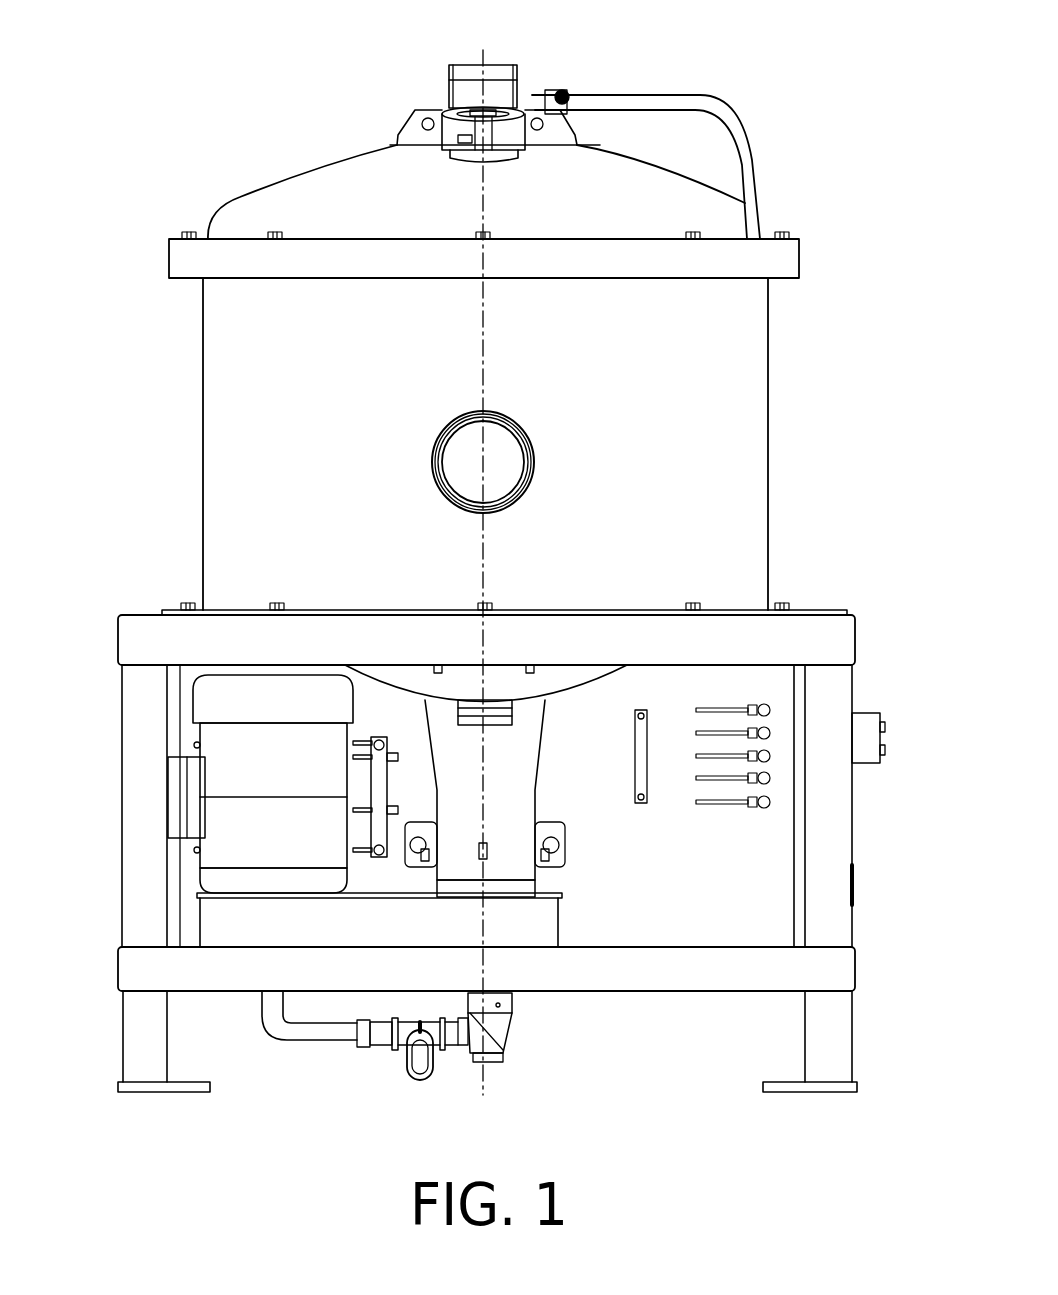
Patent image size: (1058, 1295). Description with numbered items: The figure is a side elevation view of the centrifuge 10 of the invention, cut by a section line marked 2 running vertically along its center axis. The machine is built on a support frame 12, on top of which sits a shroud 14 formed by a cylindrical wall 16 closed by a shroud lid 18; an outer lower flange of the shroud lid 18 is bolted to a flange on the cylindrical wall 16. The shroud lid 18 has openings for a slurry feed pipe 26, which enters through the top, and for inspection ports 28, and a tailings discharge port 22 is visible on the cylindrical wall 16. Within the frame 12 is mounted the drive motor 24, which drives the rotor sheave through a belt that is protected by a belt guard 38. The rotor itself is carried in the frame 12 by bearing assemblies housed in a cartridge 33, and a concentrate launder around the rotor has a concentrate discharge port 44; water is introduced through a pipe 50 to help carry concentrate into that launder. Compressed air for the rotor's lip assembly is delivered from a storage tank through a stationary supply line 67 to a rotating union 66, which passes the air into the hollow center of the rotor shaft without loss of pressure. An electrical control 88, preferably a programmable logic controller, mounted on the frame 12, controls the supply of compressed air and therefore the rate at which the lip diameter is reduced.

The section line 2- 2 is at (483, 50).
The centrifuge 10 is at (160, 487).
The support frame 12 is at (122, 710).
The shroud 14 is at (182, 336).
The cylindrical wall 16 is at (203, 428).
The shroud lid 18 is at (265, 182).
The tailings discharge port 22 is at (535, 462).
The drive motor 24 is at (220, 850).
The slurry feed pipe 26 is at (450, 93).
The inspection ports 28 is at (512, 140).
The cartridge 33 is at (538, 790).
The belt guard 38 is at (552, 926).
The concentrate discharge port 44 is at (512, 718).
The pipe 50 is at (755, 170).
The rotating union 66 is at (498, 1037).
The stationary supply line 67 is at (318, 1043).
The electrical control 88 is at (870, 742).